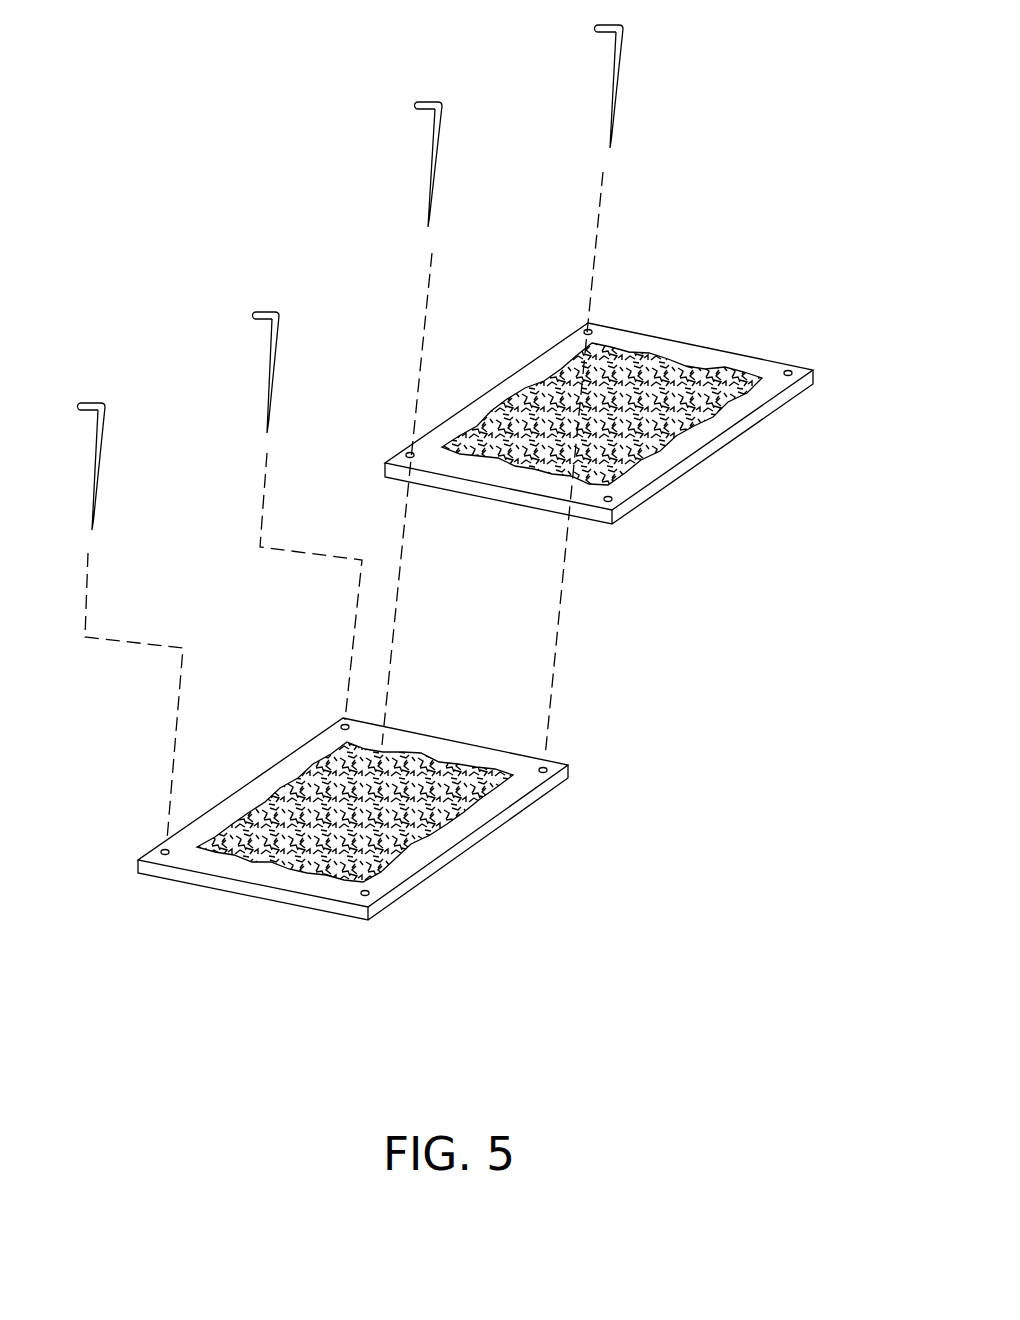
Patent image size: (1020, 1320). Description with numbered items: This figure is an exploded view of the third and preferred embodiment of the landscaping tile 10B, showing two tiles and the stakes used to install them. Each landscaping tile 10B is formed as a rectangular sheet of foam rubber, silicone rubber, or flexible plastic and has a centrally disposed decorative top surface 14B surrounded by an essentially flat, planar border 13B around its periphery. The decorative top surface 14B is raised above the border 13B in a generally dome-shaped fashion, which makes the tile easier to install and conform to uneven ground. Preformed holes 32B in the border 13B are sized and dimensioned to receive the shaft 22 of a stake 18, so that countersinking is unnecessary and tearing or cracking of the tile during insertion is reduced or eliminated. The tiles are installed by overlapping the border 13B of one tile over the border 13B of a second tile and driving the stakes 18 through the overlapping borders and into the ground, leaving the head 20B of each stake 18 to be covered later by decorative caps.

The landscaping tile 10B is at (748, 470).
The border 13B is at (662, 465).
The decorative top surface 14B is at (683, 372).
The preformed hole 32B is at (612, 505).
The stake 18 is at (219, 375).
The head 20B is at (268, 311).
The shaft 22 is at (280, 348).